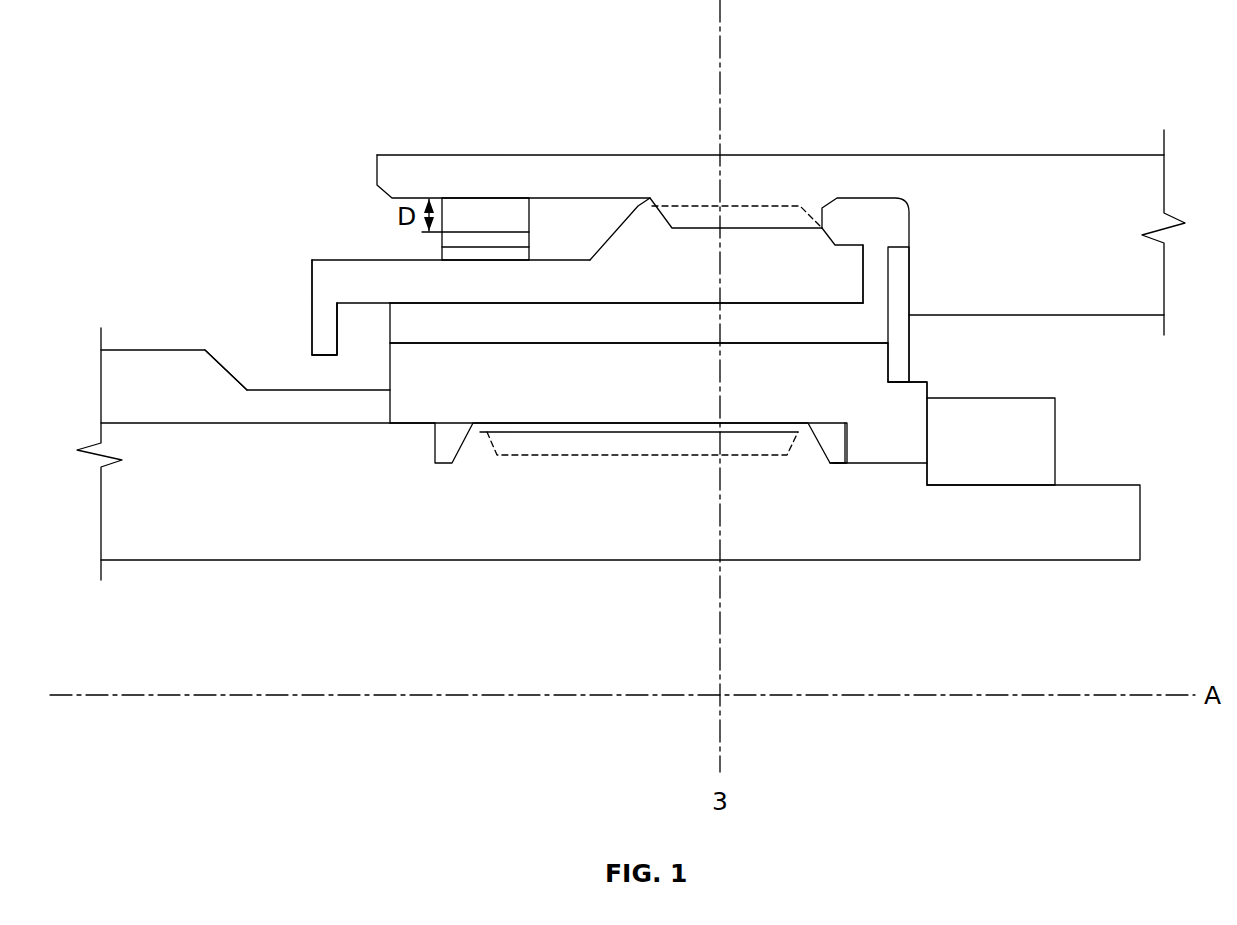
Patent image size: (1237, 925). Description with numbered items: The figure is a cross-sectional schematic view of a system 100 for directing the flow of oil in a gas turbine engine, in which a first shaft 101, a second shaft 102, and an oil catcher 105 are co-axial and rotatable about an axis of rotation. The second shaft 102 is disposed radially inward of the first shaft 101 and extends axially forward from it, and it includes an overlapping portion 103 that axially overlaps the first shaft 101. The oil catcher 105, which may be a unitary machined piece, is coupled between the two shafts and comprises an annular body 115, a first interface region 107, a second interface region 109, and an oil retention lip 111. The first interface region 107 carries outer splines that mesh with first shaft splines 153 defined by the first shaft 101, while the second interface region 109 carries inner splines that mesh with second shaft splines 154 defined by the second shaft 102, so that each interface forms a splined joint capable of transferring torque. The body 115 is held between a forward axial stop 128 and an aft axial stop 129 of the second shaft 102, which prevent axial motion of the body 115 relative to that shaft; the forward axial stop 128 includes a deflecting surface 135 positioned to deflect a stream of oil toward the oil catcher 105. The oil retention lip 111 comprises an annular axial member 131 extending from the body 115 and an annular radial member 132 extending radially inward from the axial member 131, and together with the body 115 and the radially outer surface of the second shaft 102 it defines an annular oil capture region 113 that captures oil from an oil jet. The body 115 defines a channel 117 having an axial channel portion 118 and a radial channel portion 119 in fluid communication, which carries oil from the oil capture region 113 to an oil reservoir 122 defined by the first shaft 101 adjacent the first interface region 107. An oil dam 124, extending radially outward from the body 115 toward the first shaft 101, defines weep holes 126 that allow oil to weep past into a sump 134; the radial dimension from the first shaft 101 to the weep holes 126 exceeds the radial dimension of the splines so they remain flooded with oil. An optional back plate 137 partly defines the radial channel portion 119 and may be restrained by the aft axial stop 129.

The system 100 is at (147, 63).
The first shaft 101 is at (1121, 234).
The second shaft 102 is at (216, 506).
The overlapping portion 103 is at (797, 585).
The oil catcher 105 is at (297, 228).
The first interface region 107 is at (740, 188).
The second interface region 109 is at (596, 457).
The oil retention lip 111 is at (318, 303).
The oil capture region 113 is at (348, 323).
The body 115 is at (670, 283).
The channel 117 is at (840, 322).
The axial channel portion 118 is at (606, 336).
The radial channel portion 119 is at (873, 285).
The oil reservoir 122 is at (878, 197).
The oil dam 124 is at (469, 208).
The weep holes 126 is at (523, 239).
The forward axial stop 128 is at (173, 392).
The aft axial stop 129 is at (1015, 456).
The axial member 131 is at (376, 268).
The radial member 132 is at (317, 340).
The sump 134 is at (363, 74).
The deflecting surface 135 is at (233, 373).
The back plate 137 is at (900, 373).
The first shaft splines 153 is at (755, 213).
The second shaft splines 154 is at (753, 440).